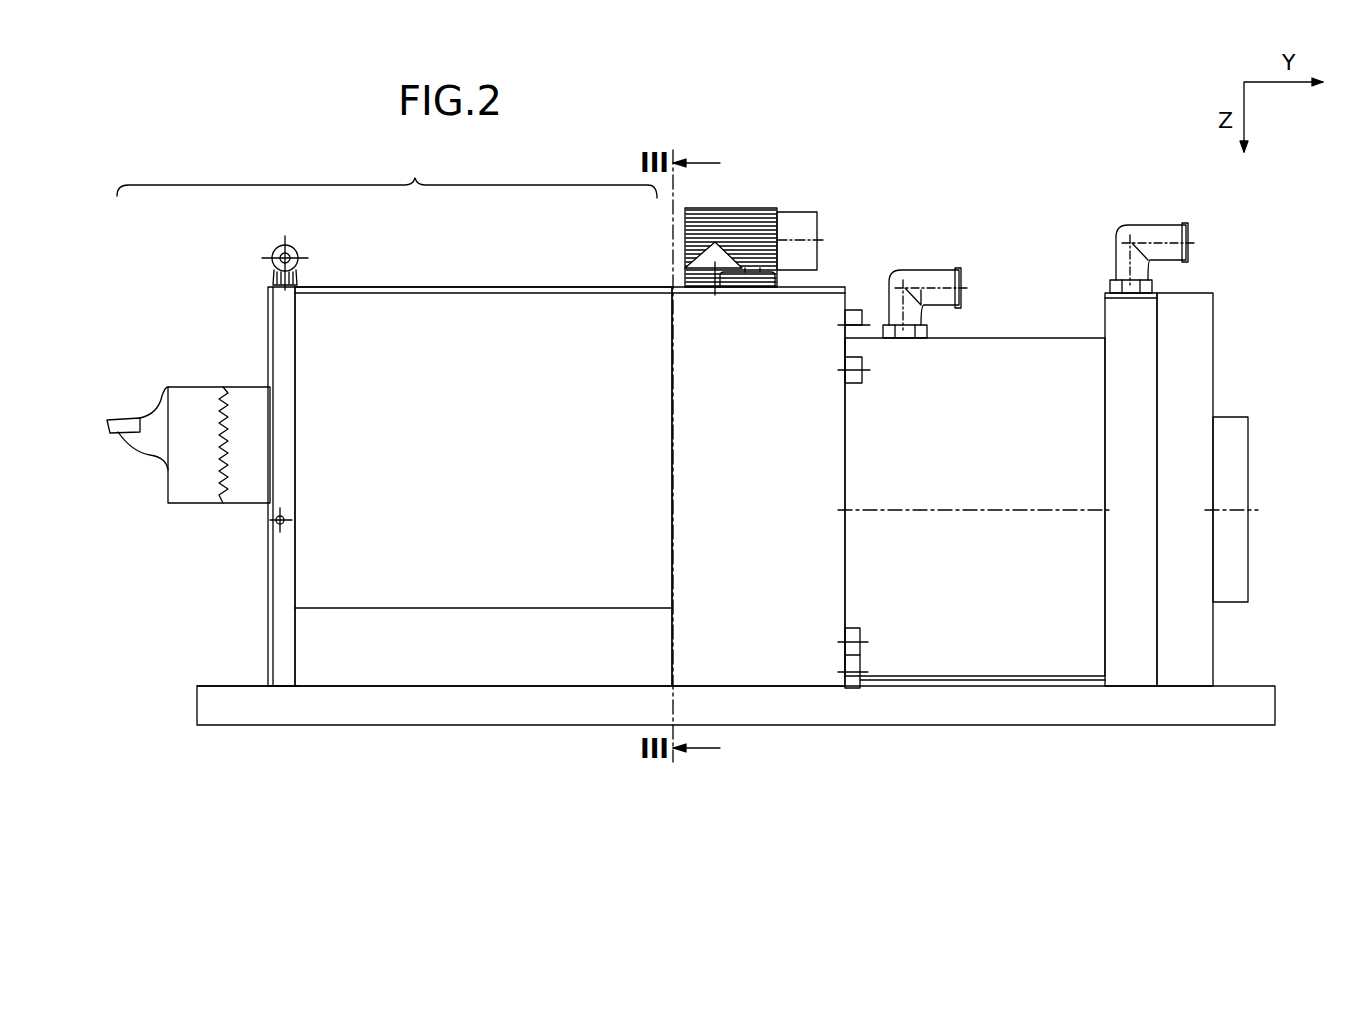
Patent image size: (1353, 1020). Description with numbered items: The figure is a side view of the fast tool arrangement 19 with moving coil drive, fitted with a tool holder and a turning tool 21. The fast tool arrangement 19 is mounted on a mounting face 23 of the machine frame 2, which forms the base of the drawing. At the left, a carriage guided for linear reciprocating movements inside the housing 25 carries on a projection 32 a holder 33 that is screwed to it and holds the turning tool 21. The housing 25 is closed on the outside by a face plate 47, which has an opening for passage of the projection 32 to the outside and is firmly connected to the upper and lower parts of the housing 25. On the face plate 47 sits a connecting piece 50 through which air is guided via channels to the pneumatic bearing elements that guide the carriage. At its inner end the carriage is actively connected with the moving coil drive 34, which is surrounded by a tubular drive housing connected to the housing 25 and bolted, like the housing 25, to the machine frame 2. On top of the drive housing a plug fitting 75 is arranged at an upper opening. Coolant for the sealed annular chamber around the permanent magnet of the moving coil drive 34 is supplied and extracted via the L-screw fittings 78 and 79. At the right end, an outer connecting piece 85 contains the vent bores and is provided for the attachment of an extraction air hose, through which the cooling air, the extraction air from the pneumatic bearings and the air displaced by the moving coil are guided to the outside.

The machine frame 2 is at (243, 706).
The fast tool arrangement 19 is at (394, 215).
The turning tool 21 is at (112, 418).
The mounting face 23 is at (213, 684).
The housing 25 is at (478, 280).
The projection 32 is at (240, 397).
The holder 33 is at (192, 489).
The moving coil drive 34 is at (1022, 322).
The face plate 47 is at (270, 315).
The connecting piece 50 is at (296, 250).
The plug fitting 75 is at (797, 215).
The L-screw fitting 78 is at (926, 278).
The L-screw fitting 79 is at (1158, 232).
The outer connecting piece 85 is at (1232, 420).